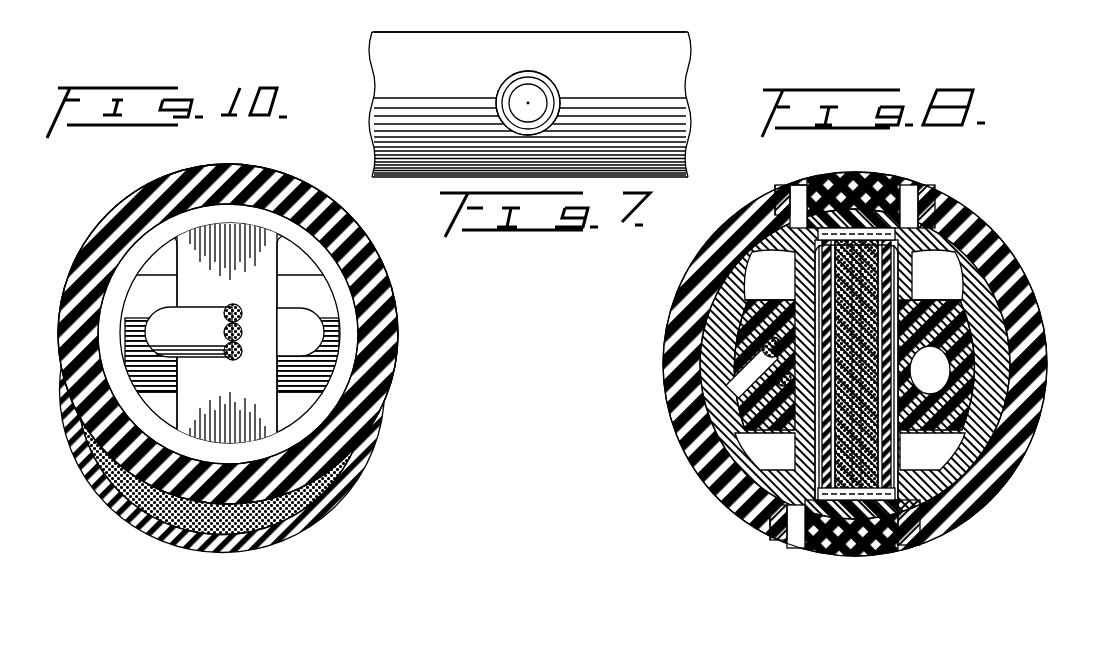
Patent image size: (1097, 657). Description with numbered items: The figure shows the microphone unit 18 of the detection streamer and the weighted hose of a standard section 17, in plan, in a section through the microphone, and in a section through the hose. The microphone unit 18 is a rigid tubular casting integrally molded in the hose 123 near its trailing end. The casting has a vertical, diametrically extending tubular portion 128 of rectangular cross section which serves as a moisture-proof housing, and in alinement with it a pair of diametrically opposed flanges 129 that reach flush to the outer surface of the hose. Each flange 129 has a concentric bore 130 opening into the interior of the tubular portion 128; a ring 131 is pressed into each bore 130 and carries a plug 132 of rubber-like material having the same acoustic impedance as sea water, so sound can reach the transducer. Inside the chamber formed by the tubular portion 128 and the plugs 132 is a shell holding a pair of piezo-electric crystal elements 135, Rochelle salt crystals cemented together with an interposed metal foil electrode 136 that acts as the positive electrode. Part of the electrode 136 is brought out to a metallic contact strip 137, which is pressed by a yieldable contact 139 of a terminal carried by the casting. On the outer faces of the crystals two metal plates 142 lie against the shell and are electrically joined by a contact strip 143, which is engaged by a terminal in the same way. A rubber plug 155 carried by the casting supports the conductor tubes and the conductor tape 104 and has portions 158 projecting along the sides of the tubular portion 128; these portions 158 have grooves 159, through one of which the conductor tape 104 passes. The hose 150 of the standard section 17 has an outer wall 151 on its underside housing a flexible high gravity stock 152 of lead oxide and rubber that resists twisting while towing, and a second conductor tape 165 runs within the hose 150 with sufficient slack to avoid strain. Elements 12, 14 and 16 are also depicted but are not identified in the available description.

In FIG. 10, the pipe 12 is at (276, 182).
In FIG. 7, the pipe 12 is at (366, 40).
In FIG. 8, the pipe 12 is at (1022, 274).
In FIG. 10, the housing 14 is at (239, 390).
In FIG. 7, the pipe wall 16 is at (412, 32).
In FIG. 8, the pipe wall 16 is at (1040, 322).
In FIG. 10, the standard section 17 is at (150, 190).
In FIG. 10, the microphone unit 18 is at (322, 256).
In FIG. 7, the microphone unit 18 is at (566, 88).
In FIG. 8, the microphone unit 18 is at (775, 180).
In FIG. 8, the conductor tape 104 is at (760, 332).
In FIG. 7, the hose 123 is at (650, 42).
In FIG. 8, the hose 123 is at (700, 266).
In FIG. 10, the tubular portion 128 is at (232, 335).
In FIG. 8, the tubular portion 128 is at (995, 478).
In FIG. 8, the flange 129 is at (938, 200).
In FIG. 7, the bore 130 is at (548, 79).
In FIG. 8, the bore 130 is at (798, 186).
In FIG. 7, the ring 131 is at (518, 82).
In FIG. 8, the ring 131 is at (912, 188).
In FIG. 7, the plug 132 is at (521, 101).
In FIG. 8, the plug 132 is at (855, 176).
In FIG. 8, the piezo-electric crystal element 135 is at (847, 363).
In FIG. 8, the electrode 136 is at (857, 383).
In FIG. 8, the contact strip 137 is at (757, 535).
In FIG. 8, the yieldable contact 139 is at (820, 290).
In FIG. 8, the plate 142 is at (888, 455).
In FIG. 8, the contact strip 143 is at (778, 189).
In FIG. 10, the hose 150 is at (220, 165).
In FIG. 10, the outer wall 151 is at (140, 520).
In FIG. 10, the high gravity stock 152 is at (332, 510).
In FIG. 10, the rubber plug 155 is at (320, 365).
In FIG. 8, the rubber plug 155 is at (1045, 352).
In FIG. 10, the portion 158 is at (318, 283).
In FIG. 8, the portion 158 is at (717, 455).
In FIG. 10, the groove 159 is at (163, 318).
In FIG. 8, the groove 159 is at (760, 362).
In FIG. 10, the second conductor tape 165 is at (193, 332).